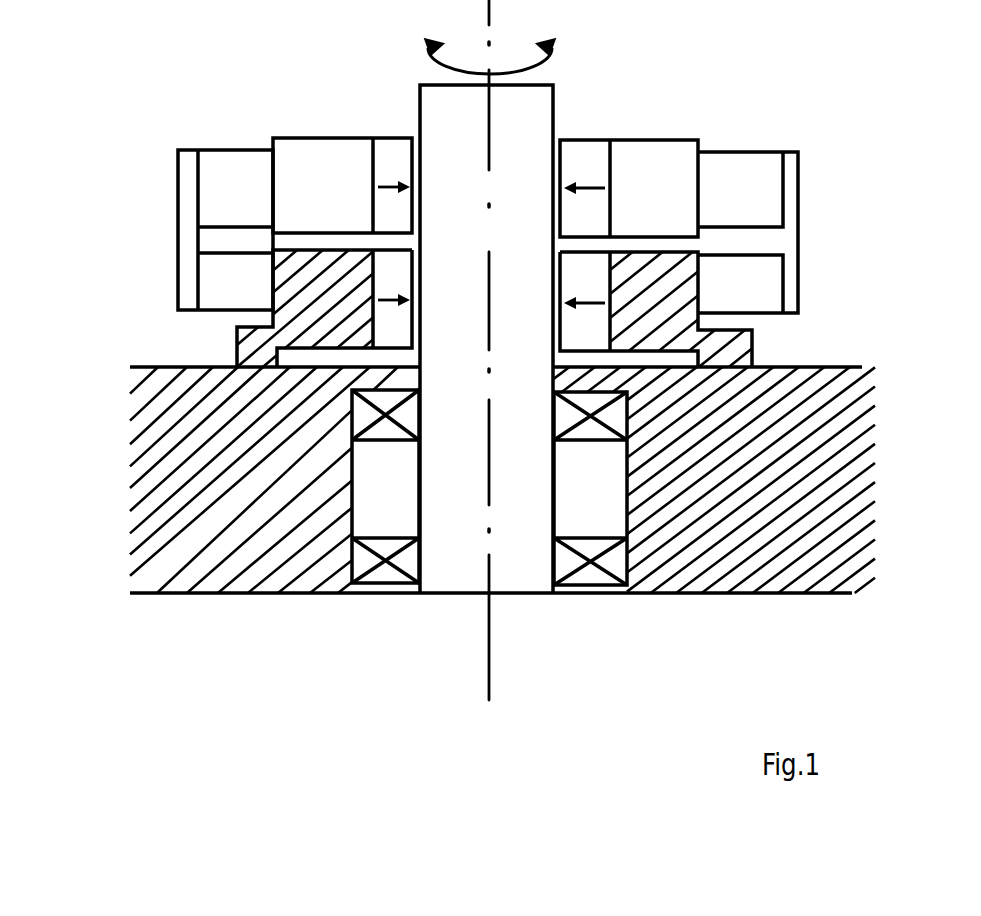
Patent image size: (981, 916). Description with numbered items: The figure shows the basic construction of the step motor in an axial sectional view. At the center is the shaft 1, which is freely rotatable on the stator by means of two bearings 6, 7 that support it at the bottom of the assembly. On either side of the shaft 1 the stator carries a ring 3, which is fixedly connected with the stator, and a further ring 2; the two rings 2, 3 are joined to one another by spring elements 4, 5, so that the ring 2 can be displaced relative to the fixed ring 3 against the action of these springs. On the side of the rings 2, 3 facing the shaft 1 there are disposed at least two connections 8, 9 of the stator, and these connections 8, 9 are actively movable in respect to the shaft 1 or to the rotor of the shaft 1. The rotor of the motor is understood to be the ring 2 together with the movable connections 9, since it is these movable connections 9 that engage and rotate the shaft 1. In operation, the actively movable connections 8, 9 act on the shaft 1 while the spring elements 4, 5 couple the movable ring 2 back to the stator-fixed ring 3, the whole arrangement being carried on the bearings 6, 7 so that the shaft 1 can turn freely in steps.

The shaft 1 is at (530, 122).
The ring 2 is at (635, 170).
The ring 3 is at (682, 277).
The spring element 4 is at (772, 217).
The spring element 5 is at (772, 288).
The bearing 6 is at (593, 580).
The bearing 7 is at (397, 435).
The connection 8 is at (392, 278).
The movable connection 9 is at (387, 153).